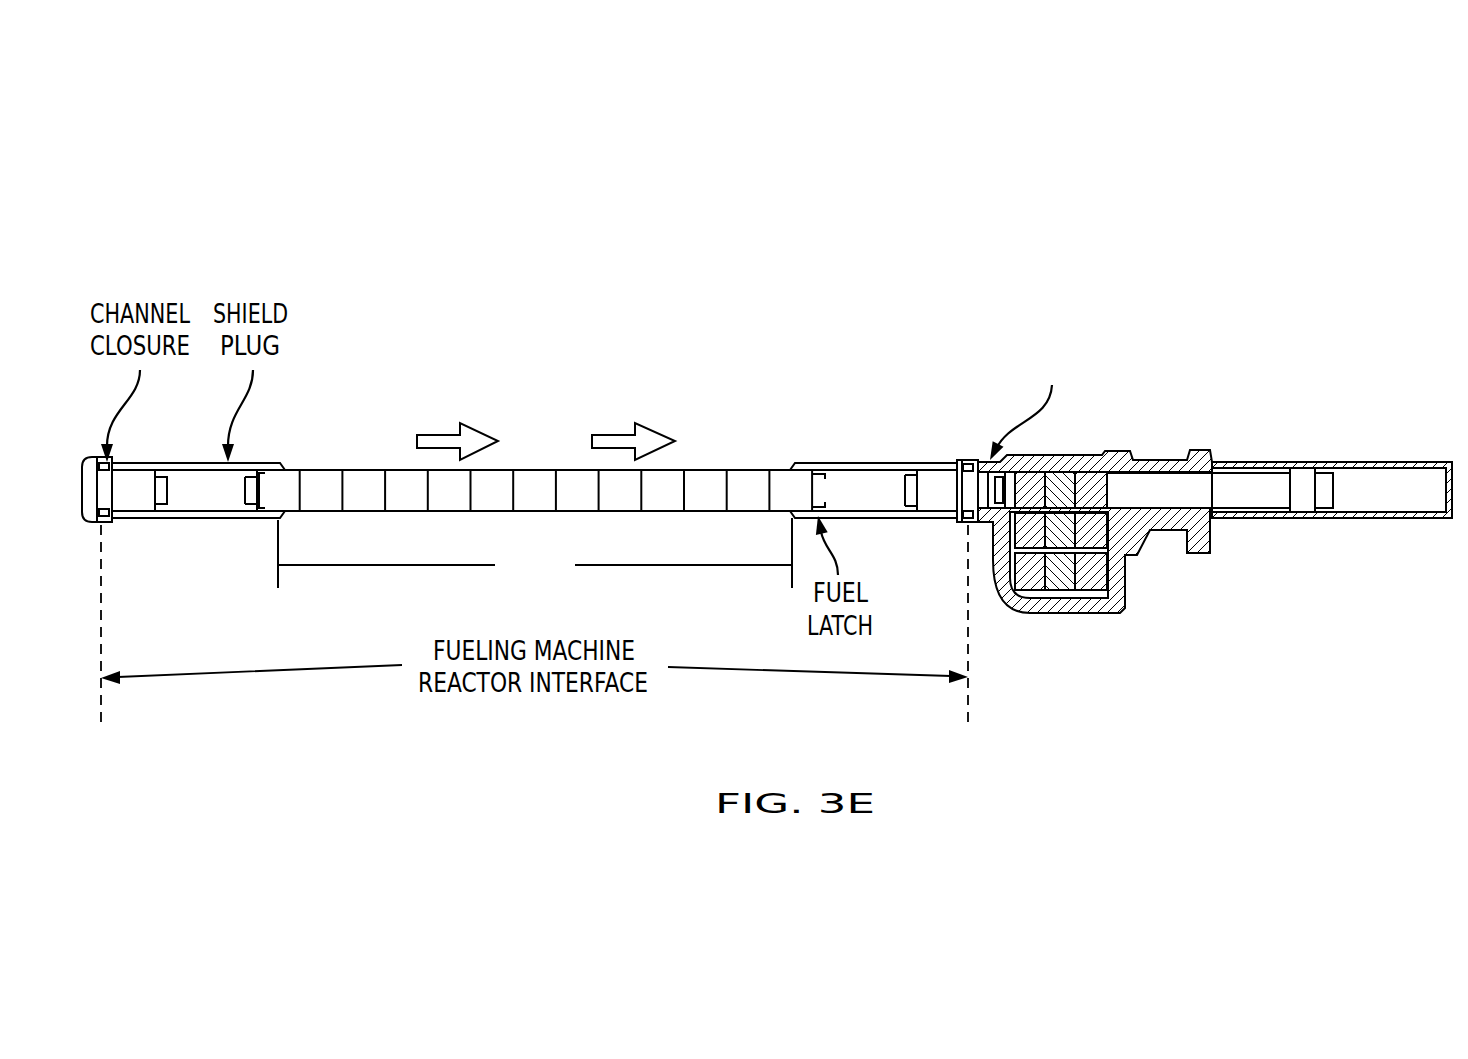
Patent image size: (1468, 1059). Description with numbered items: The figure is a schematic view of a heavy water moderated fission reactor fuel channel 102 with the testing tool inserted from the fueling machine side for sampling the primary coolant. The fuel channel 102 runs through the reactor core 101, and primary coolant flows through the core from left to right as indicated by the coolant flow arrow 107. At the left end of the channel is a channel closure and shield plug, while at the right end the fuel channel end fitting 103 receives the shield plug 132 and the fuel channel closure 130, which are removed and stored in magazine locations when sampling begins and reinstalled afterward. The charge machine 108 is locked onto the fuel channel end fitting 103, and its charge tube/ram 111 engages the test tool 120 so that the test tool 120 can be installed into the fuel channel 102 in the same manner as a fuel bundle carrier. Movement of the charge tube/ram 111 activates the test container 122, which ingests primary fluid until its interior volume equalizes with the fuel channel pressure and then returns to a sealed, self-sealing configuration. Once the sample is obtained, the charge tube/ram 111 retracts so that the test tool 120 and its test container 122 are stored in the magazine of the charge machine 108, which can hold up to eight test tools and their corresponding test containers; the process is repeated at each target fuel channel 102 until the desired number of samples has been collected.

The reactor core 101 is at (534, 540).
The fuel channel 102 is at (371, 446).
The fuel channel end fitting 103 is at (914, 551).
The coolant flow arrow 107 is at (546, 419).
The charge machine 108 is at (1215, 418).
The charge tube/ram 111 is at (1261, 452).
The test tool 120 is at (1072, 621).
The test container 122 is at (1062, 485).
The fuel channel closure 130 is at (960, 447).
The shield plug 132 is at (842, 448).